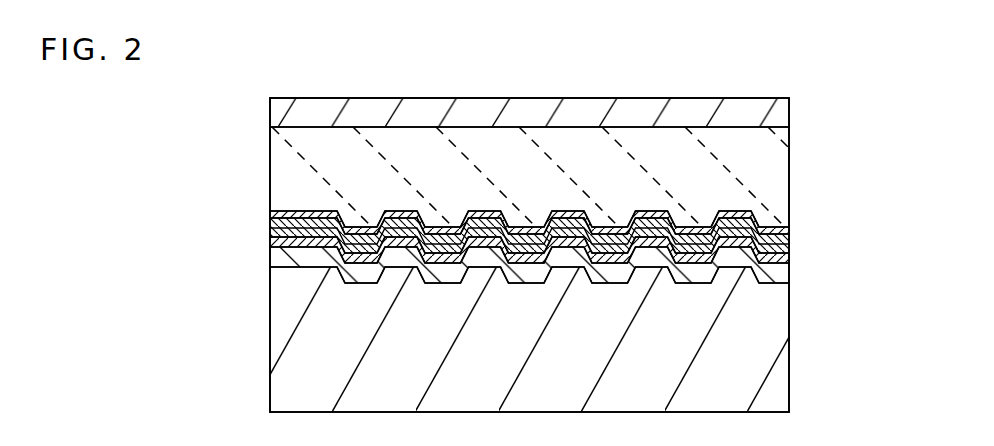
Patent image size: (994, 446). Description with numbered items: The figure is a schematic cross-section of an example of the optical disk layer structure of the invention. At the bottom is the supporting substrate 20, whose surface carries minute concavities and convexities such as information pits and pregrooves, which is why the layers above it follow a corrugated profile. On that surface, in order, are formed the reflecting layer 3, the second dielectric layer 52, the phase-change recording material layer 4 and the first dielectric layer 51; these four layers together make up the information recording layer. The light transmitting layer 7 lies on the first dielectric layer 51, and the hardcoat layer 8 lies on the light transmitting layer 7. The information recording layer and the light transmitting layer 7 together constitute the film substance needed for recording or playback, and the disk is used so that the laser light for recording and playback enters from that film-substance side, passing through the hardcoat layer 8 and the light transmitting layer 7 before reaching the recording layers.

The hardcoat layer 8 is at (788, 109).
The light transmitting layer 7 is at (786, 157).
The first dielectric layer 51 is at (792, 214).
The phase-change recording material layer 4 is at (792, 230).
The second dielectric layer 52 is at (792, 240).
The reflecting layer 3 is at (792, 265).
The supporting substrate 20 is at (786, 387).